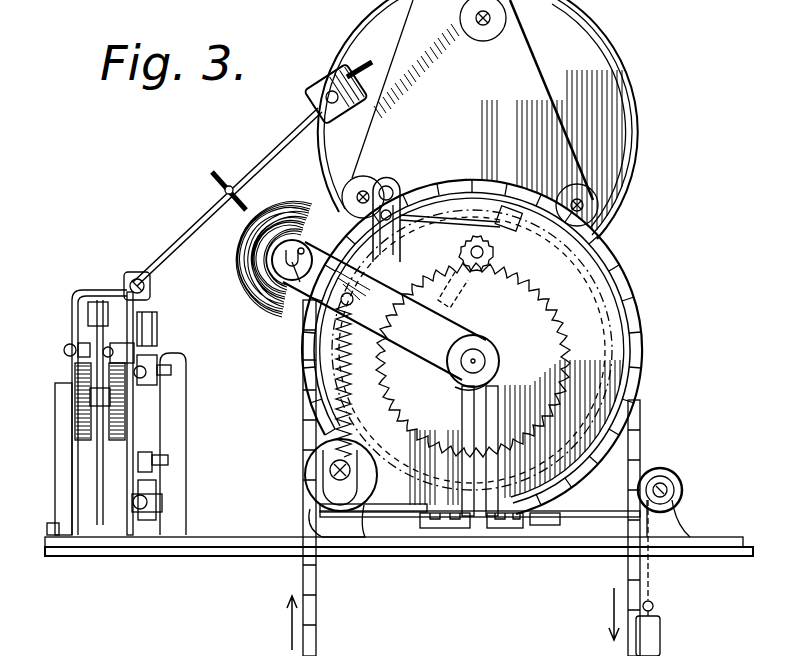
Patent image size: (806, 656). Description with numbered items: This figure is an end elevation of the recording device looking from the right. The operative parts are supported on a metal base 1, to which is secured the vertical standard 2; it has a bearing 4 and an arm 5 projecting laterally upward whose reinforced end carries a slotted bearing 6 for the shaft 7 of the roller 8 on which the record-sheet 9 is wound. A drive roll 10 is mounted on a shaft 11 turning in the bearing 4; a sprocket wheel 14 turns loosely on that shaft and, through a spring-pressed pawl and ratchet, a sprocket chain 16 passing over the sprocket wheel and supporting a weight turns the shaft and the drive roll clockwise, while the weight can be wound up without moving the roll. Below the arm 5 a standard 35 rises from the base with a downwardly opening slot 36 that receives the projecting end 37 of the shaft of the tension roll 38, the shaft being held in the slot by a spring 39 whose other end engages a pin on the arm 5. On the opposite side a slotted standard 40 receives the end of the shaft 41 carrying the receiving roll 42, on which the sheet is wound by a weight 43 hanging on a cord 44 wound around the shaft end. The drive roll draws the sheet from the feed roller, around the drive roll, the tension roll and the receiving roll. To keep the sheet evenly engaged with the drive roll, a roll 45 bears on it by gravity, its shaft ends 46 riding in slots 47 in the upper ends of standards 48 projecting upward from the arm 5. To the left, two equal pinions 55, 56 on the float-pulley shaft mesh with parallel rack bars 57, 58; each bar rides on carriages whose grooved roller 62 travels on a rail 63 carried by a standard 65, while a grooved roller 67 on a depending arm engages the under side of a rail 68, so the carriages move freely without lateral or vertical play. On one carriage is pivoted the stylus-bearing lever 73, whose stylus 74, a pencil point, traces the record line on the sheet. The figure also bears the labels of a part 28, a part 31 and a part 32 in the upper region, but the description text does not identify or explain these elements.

The base 1 is at (735, 553).
The vertical standard 2 is at (500, 460).
The bearing 4 is at (492, 360).
The arm 5 is at (452, 330).
The slotted bearing 6 is at (290, 282).
The shaft 7 is at (248, 296).
The roller 8 is at (294, 238).
The record-sheet 9 is at (432, 232).
The drive roll 10 is at (455, 215).
The shaft 11 is at (476, 358).
The sprocket wheel 14 is at (641, 440).
The sprocket chain 16 is at (640, 408).
The disk cord 28 is at (540, 92).
The pulley 31 is at (355, 185).
The pulley pin 32 is at (366, 192).
The standard 35 is at (356, 525).
The slot 36 is at (308, 495).
The shaft end 37 is at (352, 468).
The tension roll 38 is at (322, 470).
The spring 39 is at (350, 396).
The standard 40 is at (672, 522).
The shaft 41 is at (668, 490).
The roll 42 is at (676, 476).
The weight 43 is at (660, 626).
The cord 44 is at (650, 580).
The roll 45 is at (392, 182).
The shaft end 46 is at (396, 190).
The slot 47 is at (304, 250).
The standard 48 is at (354, 302).
The pinion 55 is at (76, 380).
The pinion 56 is at (112, 398).
The rack bar 57 is at (135, 353).
The rack bar 58 is at (80, 345).
The grooved roller 62 is at (152, 318).
The rail 63 is at (172, 368).
The standard 65 is at (186, 412).
The grooved roller 67 is at (160, 500).
The rail 68 is at (168, 460).
The stylus-bearing lever 73 is at (262, 222).
The stylus 74 is at (228, 178).